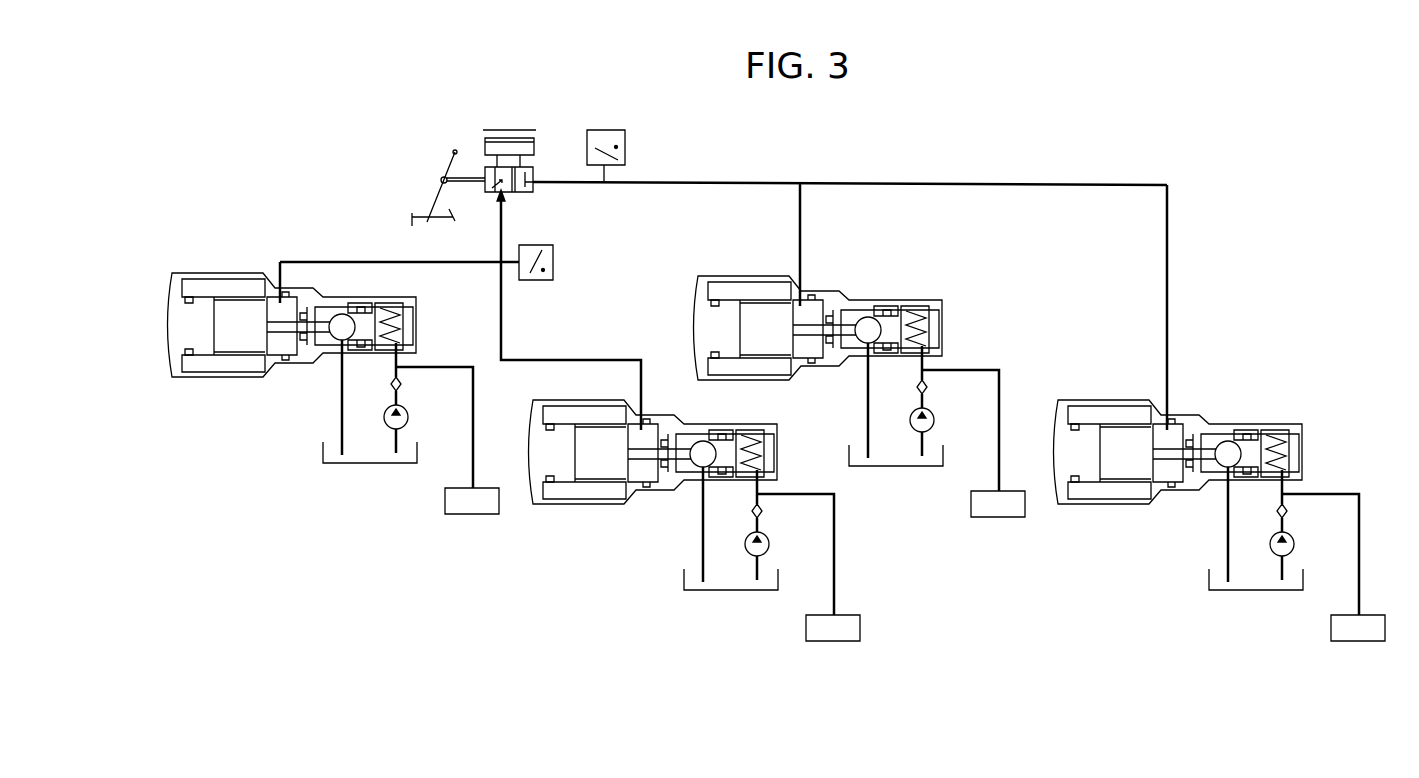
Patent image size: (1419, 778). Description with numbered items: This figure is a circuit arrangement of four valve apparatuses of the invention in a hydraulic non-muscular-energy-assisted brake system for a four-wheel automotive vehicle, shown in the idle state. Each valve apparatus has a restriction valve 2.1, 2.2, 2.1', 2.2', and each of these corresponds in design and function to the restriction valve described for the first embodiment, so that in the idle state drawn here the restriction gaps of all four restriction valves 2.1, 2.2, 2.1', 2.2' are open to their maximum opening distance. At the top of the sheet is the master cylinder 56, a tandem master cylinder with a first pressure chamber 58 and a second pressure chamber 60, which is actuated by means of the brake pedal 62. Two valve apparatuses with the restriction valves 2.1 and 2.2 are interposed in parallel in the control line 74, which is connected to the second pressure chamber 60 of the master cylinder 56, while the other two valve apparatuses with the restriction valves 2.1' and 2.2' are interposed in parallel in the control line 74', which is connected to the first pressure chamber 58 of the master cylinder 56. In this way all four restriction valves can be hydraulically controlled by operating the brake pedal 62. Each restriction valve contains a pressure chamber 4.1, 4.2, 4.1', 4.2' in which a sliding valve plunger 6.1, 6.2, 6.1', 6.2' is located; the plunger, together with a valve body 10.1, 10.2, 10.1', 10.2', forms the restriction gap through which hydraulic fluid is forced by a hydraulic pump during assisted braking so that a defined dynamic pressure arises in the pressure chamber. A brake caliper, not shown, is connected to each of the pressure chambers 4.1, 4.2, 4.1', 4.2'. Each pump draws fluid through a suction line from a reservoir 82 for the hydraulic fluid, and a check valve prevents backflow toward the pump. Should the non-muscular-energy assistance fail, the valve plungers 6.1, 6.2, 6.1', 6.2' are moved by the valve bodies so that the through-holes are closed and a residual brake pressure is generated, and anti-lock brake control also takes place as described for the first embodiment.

The restriction valve 2.1' is at (323, 350).
The restriction valve 2.2' is at (682, 503).
The restriction valve 2.1 is at (847, 365).
The restriction valve 2.2 is at (1207, 469).
The pressure chamber 4.1' is at (426, 313).
The pressure chamber 4.2' is at (770, 434).
The pressure chamber 4.1 is at (931, 304).
The pressure chamber 4.2 is at (1303, 430).
The valve plunger 6.1' is at (367, 374).
The valve plunger 6.2' is at (727, 506).
The valve plunger 6.1 is at (892, 380).
The valve plunger 6.2 is at (1250, 507).
The valve body 10.1' is at (310, 362).
The valve body 10.2' is at (670, 493).
The valve body 10.1 is at (850, 367).
The valve body 10.2 is at (1194, 494).
The master cylinder 56 is at (472, 170).
The first pressure chamber 58 is at (500, 181).
The second pressure chamber 60 is at (533, 177).
The brake pedal 62 is at (432, 203).
The control line 74 is at (850, 277).
The control line 74' is at (460, 310).
The reservoir 82 is at (452, 503).